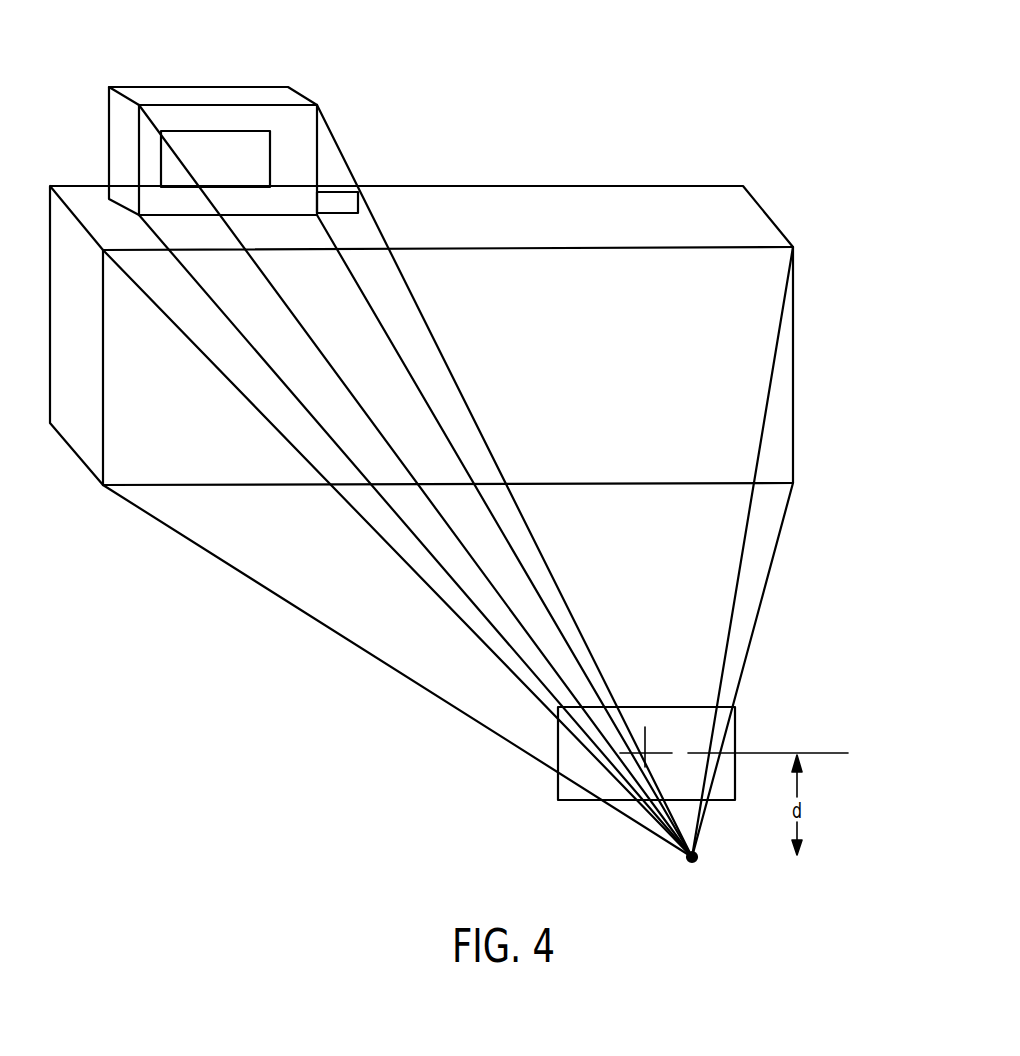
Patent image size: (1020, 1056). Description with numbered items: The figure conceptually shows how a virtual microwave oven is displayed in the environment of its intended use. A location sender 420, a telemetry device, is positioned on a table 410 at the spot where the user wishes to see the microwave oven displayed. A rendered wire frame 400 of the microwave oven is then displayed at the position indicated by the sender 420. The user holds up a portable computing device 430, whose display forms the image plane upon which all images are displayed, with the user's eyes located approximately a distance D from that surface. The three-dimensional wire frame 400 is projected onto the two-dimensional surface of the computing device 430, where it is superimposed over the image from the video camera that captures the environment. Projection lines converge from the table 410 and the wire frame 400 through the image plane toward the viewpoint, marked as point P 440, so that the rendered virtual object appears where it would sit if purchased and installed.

The rendered wire frame 400 is at (318, 105).
The table 410 is at (763, 208).
The location sender 420 is at (358, 198).
The portable computing device 430 is at (735, 713).
The point P (viewpoint) 440 is at (697, 858).